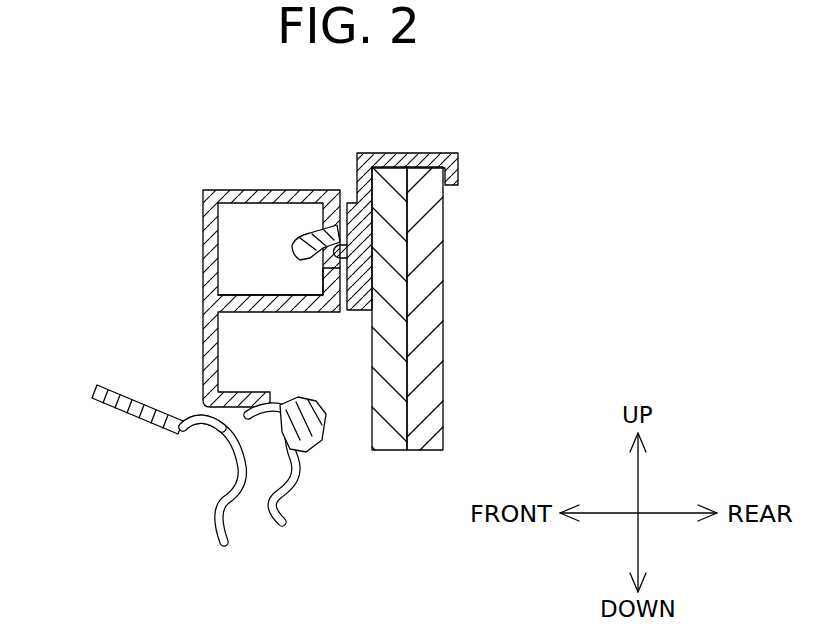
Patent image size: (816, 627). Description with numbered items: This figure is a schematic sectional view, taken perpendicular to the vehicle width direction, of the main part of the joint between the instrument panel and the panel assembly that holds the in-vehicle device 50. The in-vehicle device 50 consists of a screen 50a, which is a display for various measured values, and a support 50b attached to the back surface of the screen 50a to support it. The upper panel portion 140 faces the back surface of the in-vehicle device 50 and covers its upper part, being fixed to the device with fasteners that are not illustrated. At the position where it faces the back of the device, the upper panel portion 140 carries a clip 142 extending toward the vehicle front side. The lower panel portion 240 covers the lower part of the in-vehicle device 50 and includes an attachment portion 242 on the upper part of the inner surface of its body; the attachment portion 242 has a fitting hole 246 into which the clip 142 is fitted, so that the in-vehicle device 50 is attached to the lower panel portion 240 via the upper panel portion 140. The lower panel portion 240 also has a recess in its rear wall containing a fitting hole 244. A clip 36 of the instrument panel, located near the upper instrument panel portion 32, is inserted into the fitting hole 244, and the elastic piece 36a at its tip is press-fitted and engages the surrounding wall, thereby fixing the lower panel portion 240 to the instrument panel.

The upper instrument panel portion 32 is at (112, 410).
The clip 36 is at (222, 452).
The elastic piece 36a is at (218, 407).
The in-vehicle device 50 is at (502, 308).
The screen 50a is at (432, 305).
The support 50b is at (395, 378).
The upper panel portion 140 is at (412, 163).
The clip 142 is at (298, 250).
The lower panel portion 240 is at (203, 348).
The attachment portion 242 is at (292, 299).
The fitting hole 244 is at (290, 452).
The fitting hole 246 is at (292, 242).